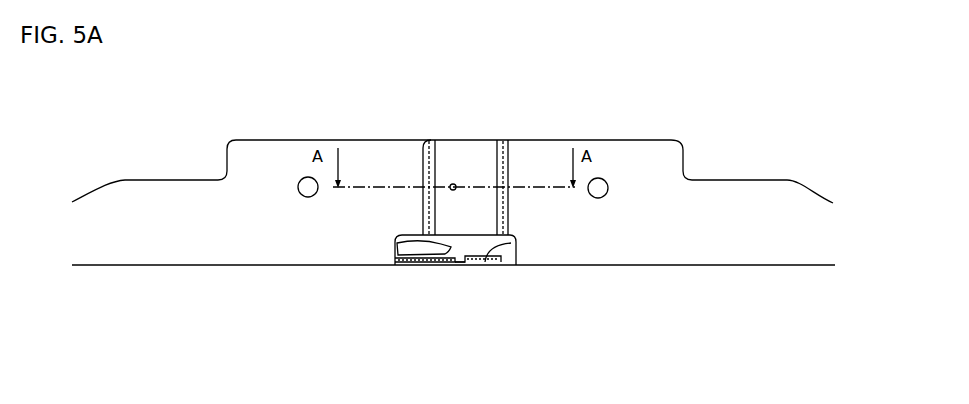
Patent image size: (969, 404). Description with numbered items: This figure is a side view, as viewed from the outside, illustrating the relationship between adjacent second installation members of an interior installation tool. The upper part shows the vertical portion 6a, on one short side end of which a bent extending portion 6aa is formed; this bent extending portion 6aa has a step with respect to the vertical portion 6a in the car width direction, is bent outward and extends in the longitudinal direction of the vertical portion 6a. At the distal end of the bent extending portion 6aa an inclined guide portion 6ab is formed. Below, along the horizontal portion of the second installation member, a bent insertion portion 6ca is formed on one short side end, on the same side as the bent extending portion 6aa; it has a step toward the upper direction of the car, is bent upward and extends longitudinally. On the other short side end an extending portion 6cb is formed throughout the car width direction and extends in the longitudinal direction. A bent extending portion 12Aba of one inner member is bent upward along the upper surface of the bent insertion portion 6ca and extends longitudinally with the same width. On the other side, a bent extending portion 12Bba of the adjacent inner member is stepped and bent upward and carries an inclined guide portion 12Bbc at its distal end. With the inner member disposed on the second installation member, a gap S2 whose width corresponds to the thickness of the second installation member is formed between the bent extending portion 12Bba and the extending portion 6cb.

The vertical portion 6a is at (165, 190).
The inclined guide portion 6ab is at (422, 158).
The bent extending portion 6aa is at (465, 147).
The bent extending portion 12Bba is at (400, 258).
The inclined guide portion 12Bbc is at (425, 242).
The extending portion 6cb is at (430, 265).
The bent insertion portion 6ca is at (483, 265).
The gap S2 is at (408, 264).
The bent extending portion 12Aba is at (517, 247).